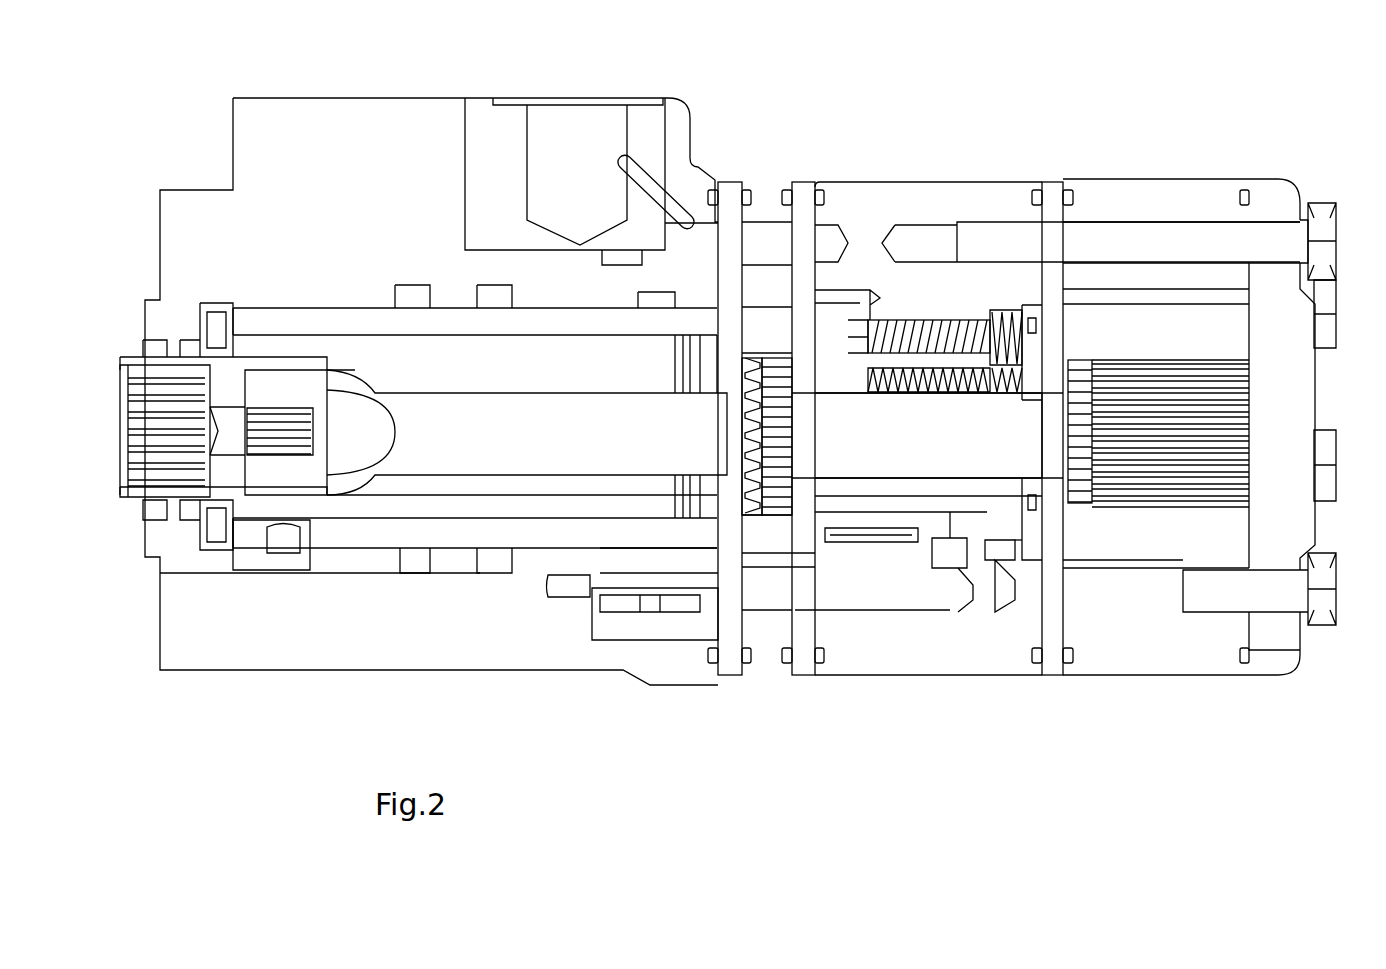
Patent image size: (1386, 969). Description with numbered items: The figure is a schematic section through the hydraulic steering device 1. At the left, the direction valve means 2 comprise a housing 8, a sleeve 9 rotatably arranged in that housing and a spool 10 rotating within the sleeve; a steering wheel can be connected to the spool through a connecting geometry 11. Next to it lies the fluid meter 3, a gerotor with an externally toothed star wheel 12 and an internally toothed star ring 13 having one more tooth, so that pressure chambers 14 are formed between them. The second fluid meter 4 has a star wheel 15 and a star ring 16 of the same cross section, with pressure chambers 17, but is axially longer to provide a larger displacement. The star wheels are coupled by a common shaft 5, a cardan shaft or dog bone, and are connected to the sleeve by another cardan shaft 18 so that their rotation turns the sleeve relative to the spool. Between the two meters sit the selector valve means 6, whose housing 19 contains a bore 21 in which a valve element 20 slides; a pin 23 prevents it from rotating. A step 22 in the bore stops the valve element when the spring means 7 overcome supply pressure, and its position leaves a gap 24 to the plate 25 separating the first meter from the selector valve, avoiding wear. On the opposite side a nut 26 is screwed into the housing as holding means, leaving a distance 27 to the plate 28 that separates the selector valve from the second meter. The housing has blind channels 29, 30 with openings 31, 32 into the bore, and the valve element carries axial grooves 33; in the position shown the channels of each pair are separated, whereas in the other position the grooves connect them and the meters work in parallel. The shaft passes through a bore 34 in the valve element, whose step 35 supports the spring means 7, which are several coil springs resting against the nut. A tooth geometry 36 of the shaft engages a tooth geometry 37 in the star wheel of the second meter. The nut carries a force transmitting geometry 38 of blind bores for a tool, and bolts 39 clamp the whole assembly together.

The hydraulic steering device 1 is at (1004, 93).
The direction valve means 2 is at (478, 680).
The fluid meter 3 is at (764, 688).
The fluid meter 4 is at (1177, 688).
The common shaft 5 is at (865, 478).
The selector valve means 6 is at (908, 688).
The spring means 7 is at (958, 225).
The housing 8 is at (390, 650).
The sleeve 9 is at (595, 532).
The spool 10 is at (385, 507).
The connecting geometry 11 is at (143, 490).
The star wheel 12 is at (762, 332).
The star ring 13 is at (767, 277).
The pressure chambers 14 is at (782, 297).
The star wheel 15 is at (1120, 323).
The star ring 16 is at (1183, 275).
The pressure chambers 17 is at (1153, 293).
The cardan shaft 18 is at (460, 415).
The housing 19 is at (972, 658).
The valve element 20 is at (897, 515).
The bore 21 is at (1005, 320).
The step 22 is at (868, 320).
The pin 23 is at (827, 542).
The gap 24 is at (828, 262).
The plate 25 is at (800, 547).
The nut 26 is at (1031, 600).
The gap or distance 27 is at (1034, 545).
The plate 28 is at (1053, 196).
The blind channels 29 is at (921, 600).
The blind channels 30 is at (1016, 600).
The openings 31 is at (945, 568).
The openings 32 is at (997, 612).
The grooves 33 is at (940, 530).
The bore 34 is at (825, 497).
The step 35 is at (892, 320).
The tooth geometry 36 is at (1080, 492).
The tooth geometry 37 is at (1242, 405).
The force transmitting geometry 38 is at (1046, 205).
The bolts 39 is at (1217, 240).